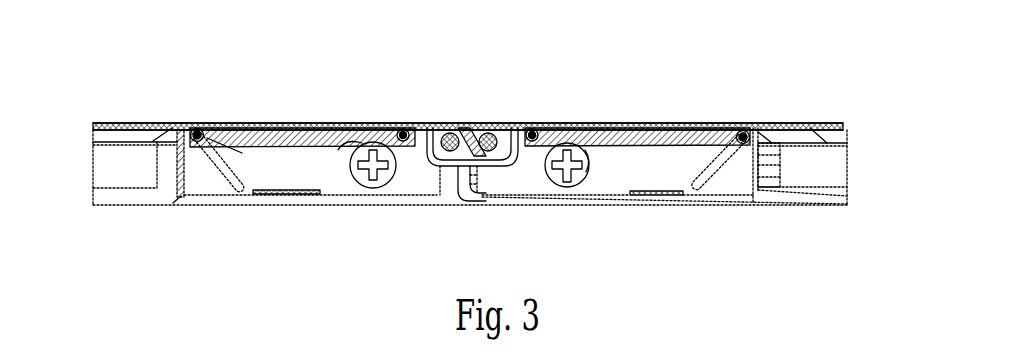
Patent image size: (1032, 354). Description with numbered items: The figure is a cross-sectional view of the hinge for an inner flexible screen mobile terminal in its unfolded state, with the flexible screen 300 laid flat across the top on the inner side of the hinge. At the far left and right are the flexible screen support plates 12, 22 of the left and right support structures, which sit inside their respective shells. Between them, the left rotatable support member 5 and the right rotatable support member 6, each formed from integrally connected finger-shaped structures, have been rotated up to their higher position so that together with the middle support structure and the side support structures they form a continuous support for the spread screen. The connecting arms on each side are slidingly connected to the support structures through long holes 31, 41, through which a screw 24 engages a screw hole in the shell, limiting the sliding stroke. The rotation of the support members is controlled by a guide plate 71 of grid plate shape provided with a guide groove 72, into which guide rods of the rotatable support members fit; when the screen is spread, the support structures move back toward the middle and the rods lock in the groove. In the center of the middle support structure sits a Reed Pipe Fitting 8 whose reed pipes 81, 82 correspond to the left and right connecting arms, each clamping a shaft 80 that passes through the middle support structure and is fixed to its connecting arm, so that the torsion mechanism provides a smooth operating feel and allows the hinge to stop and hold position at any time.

The flexible screen 300 is at (138, 127).
The left rotatable support member 5 is at (262, 128).
The flexible screen support plate 12 is at (137, 138).
The guide plate 71 is at (218, 128).
The long hole 31 is at (322, 128).
The guide groove 72 is at (225, 178).
The screw 24 is at (372, 190).
The shaft 80 is at (435, 125).
The Reed Pipe Fitting 8 is at (465, 122).
The reed pipe 81 is at (442, 164).
The reed pipe 82 is at (498, 162).
The right rotatable support member 6 is at (562, 125).
The long hole 41 is at (598, 158).
The flexible screen support plate 22 is at (782, 137).